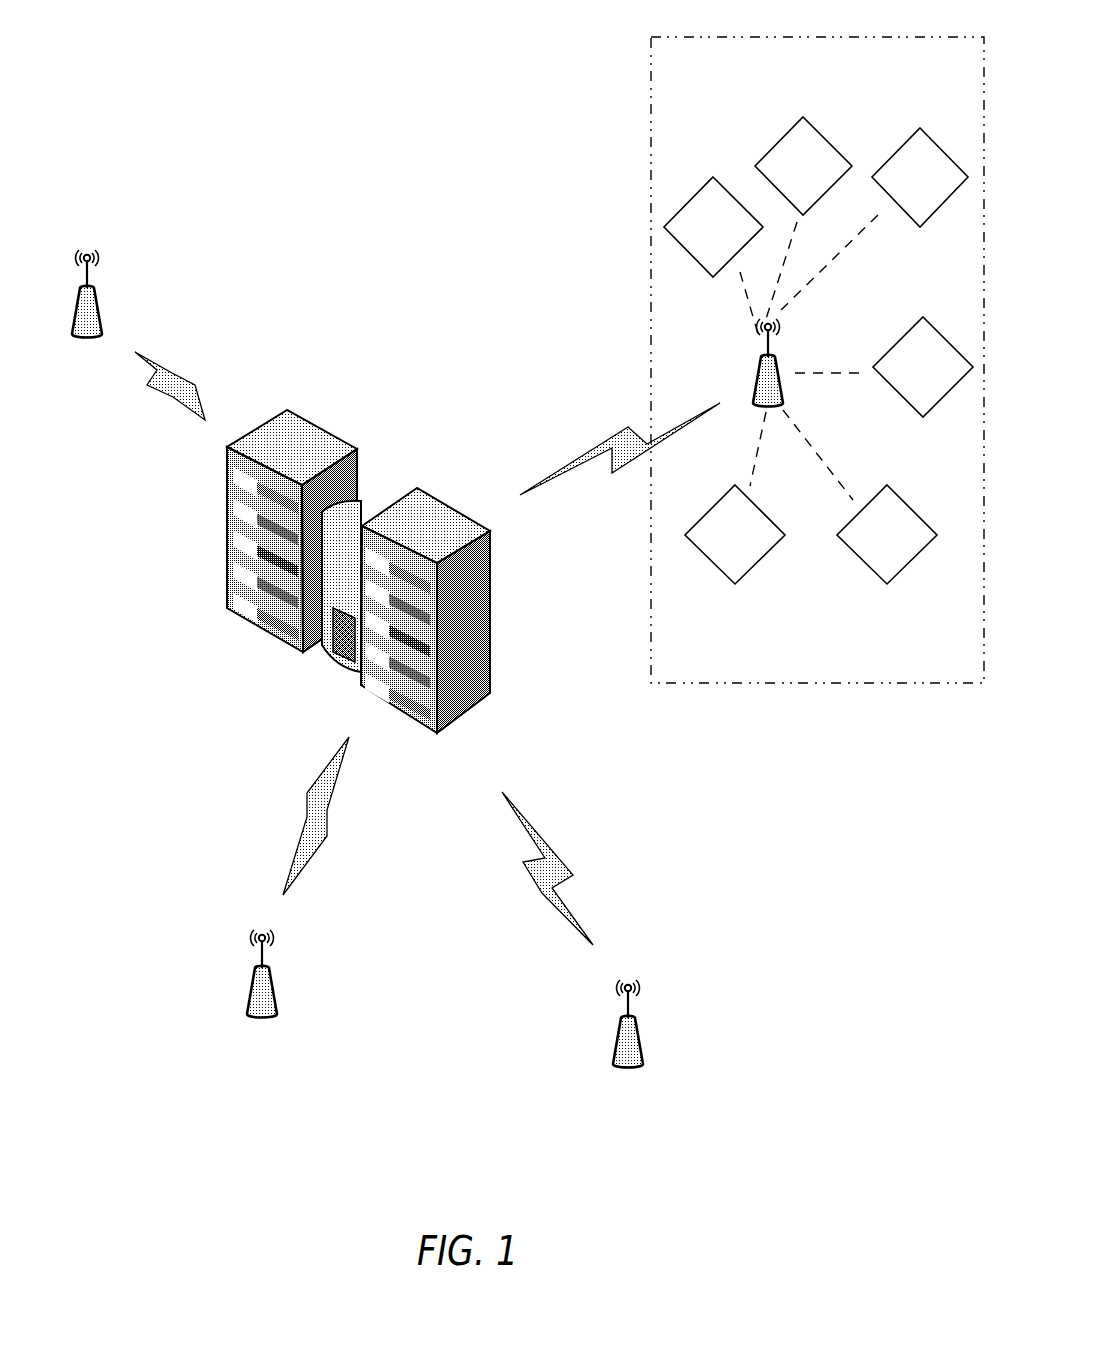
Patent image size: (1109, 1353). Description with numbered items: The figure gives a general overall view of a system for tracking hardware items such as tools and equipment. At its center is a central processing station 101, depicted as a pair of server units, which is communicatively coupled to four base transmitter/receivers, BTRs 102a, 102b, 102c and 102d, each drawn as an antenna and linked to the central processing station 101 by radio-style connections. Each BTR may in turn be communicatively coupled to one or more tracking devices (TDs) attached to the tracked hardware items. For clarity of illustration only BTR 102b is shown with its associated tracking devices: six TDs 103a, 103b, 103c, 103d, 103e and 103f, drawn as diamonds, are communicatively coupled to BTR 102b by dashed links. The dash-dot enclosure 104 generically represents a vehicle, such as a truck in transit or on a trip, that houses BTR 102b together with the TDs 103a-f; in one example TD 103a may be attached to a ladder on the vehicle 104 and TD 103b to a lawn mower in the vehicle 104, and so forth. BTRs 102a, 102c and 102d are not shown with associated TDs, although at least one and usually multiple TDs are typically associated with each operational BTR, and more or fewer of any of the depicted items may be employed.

The central processing station 101 is at (336, 571).
The base transmitter/receiver 102a is at (123, 294).
The base transmitter/receiver 102b is at (740, 380).
The base transmitter/receiver 102c is at (295, 976).
The base transmitter/receiver 102d is at (652, 1038).
The tracking device 103a is at (713, 213).
The tracking device 103b is at (803, 147).
The tracking device 103c is at (920, 162).
The tracking device 103d is at (923, 381).
The tracking device 103e is at (887, 553).
The tracking device 103f is at (727, 537).
The vehicle 104 is at (817, 377).